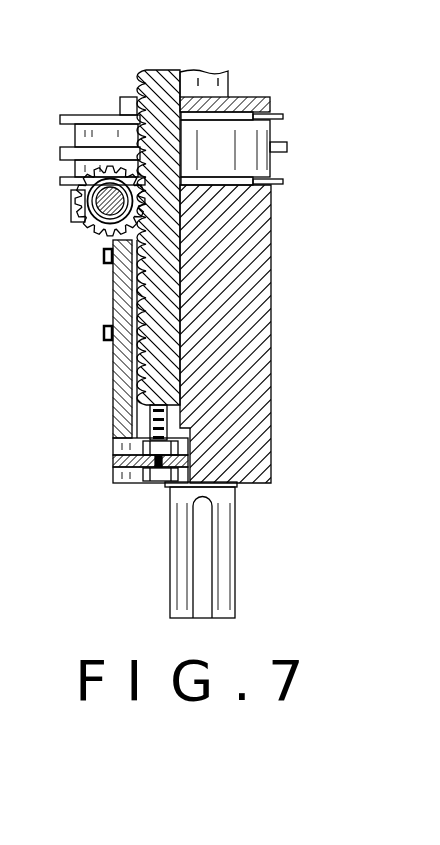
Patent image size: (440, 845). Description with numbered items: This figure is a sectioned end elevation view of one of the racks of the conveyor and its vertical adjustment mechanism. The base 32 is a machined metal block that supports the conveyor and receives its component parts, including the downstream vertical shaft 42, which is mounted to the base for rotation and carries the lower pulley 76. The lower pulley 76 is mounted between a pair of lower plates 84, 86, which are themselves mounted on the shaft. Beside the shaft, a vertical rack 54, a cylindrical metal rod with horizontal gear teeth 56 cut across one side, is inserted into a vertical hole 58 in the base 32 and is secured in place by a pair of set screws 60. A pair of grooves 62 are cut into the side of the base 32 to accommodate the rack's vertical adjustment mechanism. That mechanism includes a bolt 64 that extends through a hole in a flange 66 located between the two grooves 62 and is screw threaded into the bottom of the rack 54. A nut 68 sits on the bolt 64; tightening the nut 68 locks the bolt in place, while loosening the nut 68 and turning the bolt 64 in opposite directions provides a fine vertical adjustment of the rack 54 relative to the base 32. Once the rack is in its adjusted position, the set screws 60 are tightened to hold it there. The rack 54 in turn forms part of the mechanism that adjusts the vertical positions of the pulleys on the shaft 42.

The base 32 is at (273, 320).
The downstream vertical shaft 42 is at (199, 82).
The vertical rack 54 is at (138, 73).
The gear teeth 56 is at (137, 80).
The vertical hole 58 is at (174, 431).
The set screws 60 is at (104, 258).
The grooves 62 is at (112, 446).
The bolt 64 is at (152, 482).
The flange 66 is at (110, 462).
The nut 68 is at (143, 447).
The lower pulley 76 is at (72, 143).
The lower plate 84 is at (246, 97).
The lower plate 86 is at (272, 208).